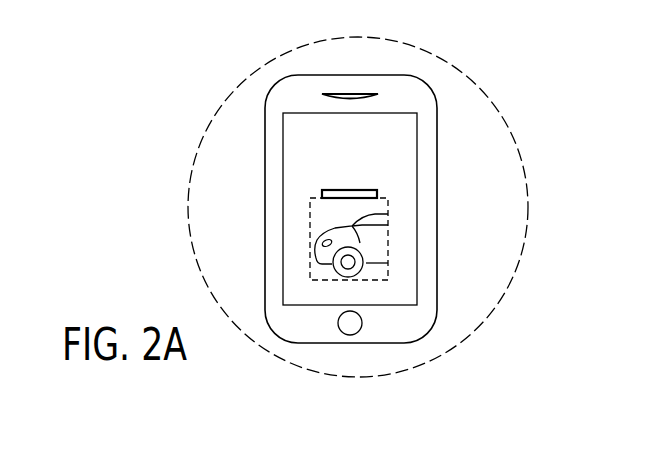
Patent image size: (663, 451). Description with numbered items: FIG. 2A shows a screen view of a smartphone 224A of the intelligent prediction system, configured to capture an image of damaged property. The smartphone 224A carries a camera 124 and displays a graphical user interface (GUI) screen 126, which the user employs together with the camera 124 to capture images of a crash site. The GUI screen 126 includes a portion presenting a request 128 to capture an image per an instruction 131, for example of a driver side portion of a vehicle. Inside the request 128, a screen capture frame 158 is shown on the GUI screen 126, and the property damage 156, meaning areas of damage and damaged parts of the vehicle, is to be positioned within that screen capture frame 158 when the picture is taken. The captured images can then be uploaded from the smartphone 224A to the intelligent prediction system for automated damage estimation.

The smartphone 224A is at (452, 116).
The camera 124 is at (351, 92).
The request 128 is at (394, 137).
The graphical user interface (GUI) screen 126 is at (302, 292).
The instruction 131 is at (377, 193).
The screen capture frame 158 is at (393, 252).
The property damage 156 is at (326, 219).